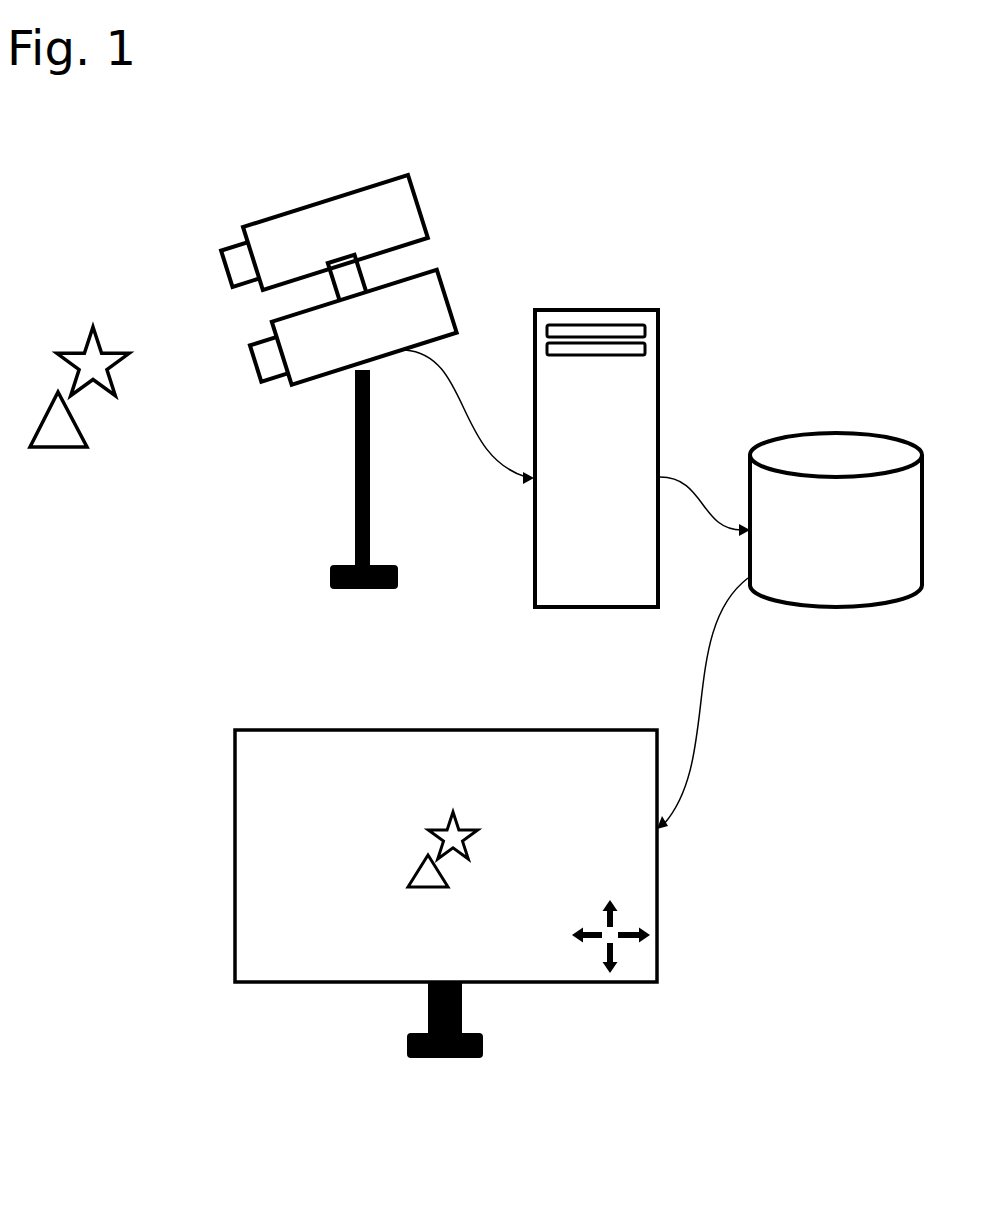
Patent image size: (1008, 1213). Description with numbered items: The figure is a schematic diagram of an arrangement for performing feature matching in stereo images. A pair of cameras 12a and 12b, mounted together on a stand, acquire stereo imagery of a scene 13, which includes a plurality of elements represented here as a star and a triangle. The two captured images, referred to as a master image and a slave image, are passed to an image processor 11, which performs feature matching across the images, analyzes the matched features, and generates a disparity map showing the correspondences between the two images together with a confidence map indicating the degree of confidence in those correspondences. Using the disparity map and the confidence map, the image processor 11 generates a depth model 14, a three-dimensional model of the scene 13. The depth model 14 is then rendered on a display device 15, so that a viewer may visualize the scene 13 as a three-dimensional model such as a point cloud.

The image processor 11 is at (645, 591).
The camera 12a is at (325, 237).
The camera 12b is at (345, 313).
The scene 13 is at (136, 476).
The depth model 14 is at (904, 585).
The display device 15 is at (273, 965).